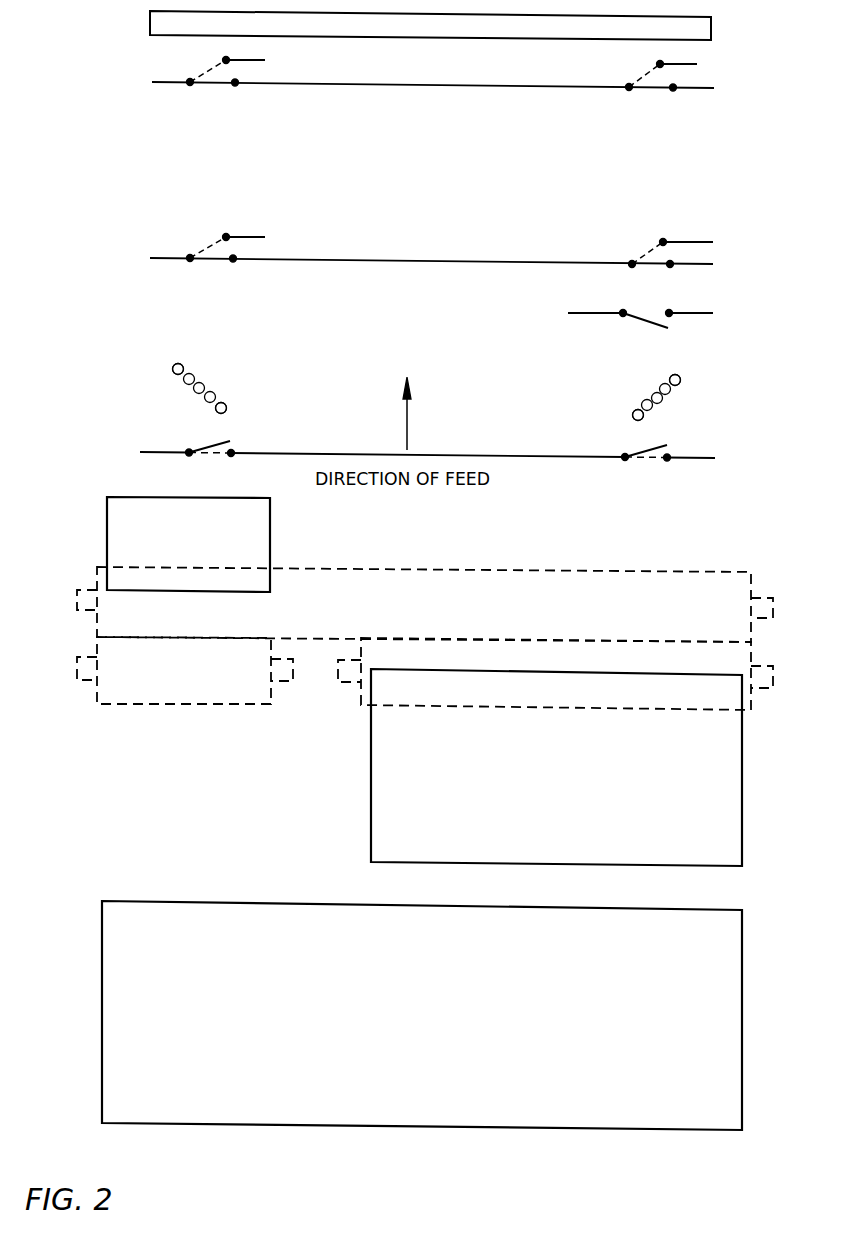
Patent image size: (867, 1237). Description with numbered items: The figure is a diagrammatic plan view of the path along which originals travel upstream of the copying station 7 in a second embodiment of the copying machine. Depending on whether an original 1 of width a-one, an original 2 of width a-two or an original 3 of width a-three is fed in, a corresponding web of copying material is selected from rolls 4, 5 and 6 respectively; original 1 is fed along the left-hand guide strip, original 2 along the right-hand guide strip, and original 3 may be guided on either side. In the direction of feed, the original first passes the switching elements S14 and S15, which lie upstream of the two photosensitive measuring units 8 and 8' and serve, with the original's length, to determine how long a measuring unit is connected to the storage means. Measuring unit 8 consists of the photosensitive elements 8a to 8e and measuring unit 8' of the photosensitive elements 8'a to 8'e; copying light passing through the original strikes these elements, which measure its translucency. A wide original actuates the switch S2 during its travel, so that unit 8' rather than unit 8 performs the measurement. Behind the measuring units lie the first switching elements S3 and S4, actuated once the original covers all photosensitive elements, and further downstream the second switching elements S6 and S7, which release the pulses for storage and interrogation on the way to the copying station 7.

The original 1 is at (130, 507).
The original 2 is at (388, 783).
The original 3 is at (112, 915).
The roll 4 is at (192, 692).
The roll 5 is at (560, 700).
The roll 6 is at (516, 590).
The copying station 7 is at (692, 28).
The photosensitive measuring unit 8 is at (214, 389).
The photosensitive element 8a is at (172, 369).
The photosensitive element 8e is at (215, 410).
The photosensitive measuring unit 8' is at (644, 398).
The photosensitive element 8'a is at (701, 379).
The photosensitive element 8'e is at (683, 422).
The switch S2 is at (640, 332).
The first switching element S3 is at (226, 261).
The first switching element S4 is at (671, 268).
The second switching element S6 is at (223, 84).
The second switching element S7 is at (662, 90).
The switching element S14 is at (210, 461).
The switching element S15 is at (646, 465).